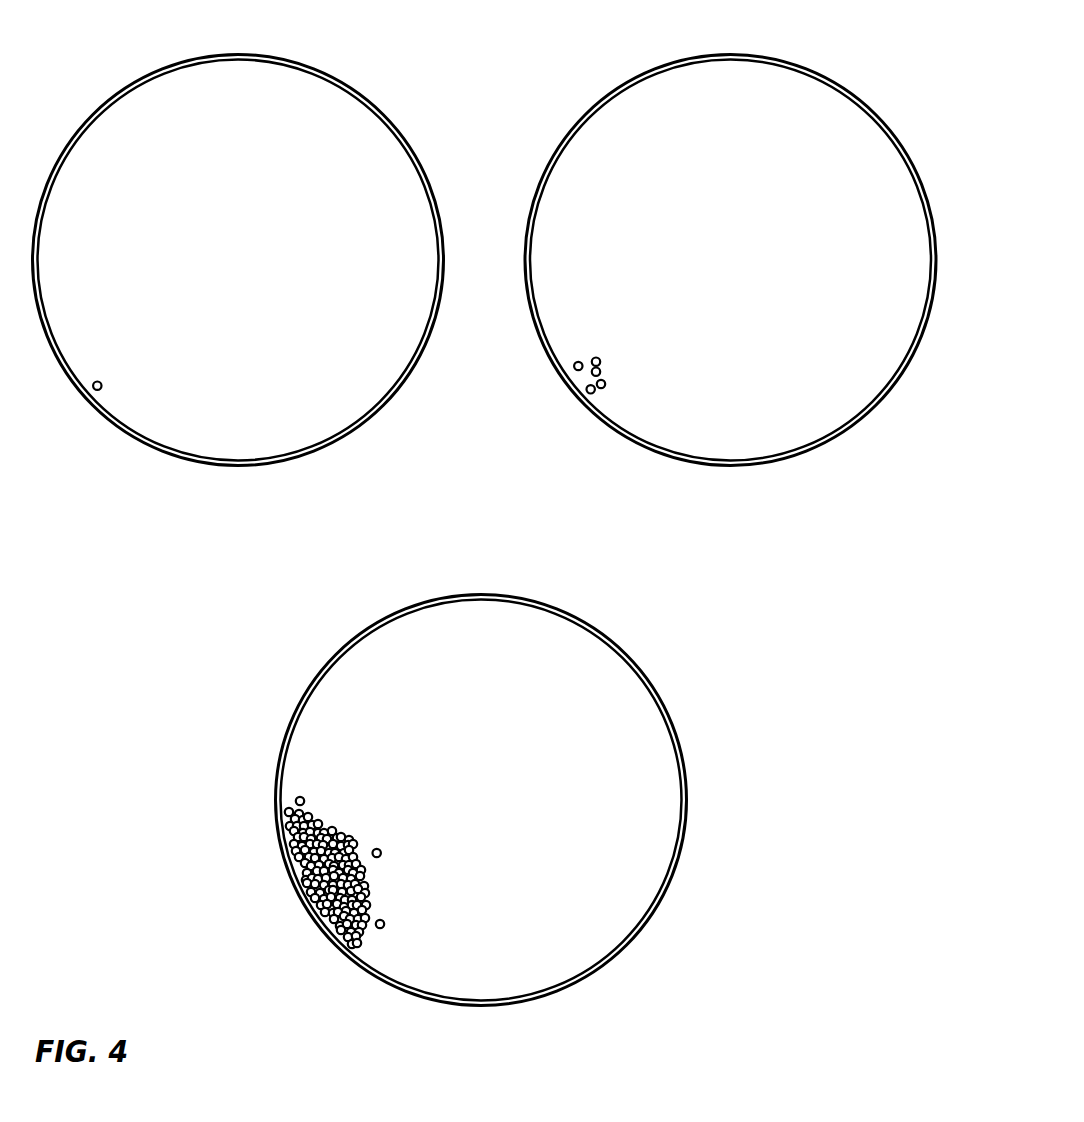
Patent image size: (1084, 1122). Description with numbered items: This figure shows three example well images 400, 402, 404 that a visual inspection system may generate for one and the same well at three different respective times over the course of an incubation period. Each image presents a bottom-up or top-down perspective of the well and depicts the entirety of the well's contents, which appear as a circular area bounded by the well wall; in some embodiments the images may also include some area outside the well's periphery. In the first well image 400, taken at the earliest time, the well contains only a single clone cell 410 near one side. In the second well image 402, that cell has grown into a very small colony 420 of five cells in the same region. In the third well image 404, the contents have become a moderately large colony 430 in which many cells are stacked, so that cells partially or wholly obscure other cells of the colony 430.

The well image 400 is at (254, 28).
The well image 402 is at (746, 28).
The well image 404 is at (499, 570).
The single clone cell 410 is at (110, 373).
The very small colony 420 is at (618, 330).
The moderately large colony 430 is at (382, 816).